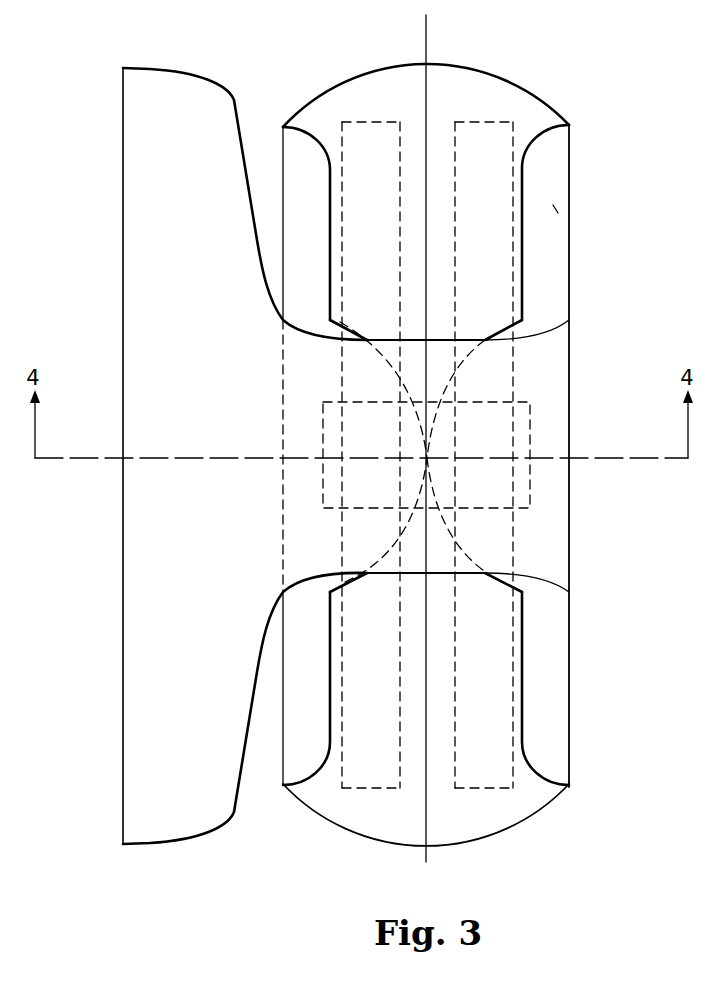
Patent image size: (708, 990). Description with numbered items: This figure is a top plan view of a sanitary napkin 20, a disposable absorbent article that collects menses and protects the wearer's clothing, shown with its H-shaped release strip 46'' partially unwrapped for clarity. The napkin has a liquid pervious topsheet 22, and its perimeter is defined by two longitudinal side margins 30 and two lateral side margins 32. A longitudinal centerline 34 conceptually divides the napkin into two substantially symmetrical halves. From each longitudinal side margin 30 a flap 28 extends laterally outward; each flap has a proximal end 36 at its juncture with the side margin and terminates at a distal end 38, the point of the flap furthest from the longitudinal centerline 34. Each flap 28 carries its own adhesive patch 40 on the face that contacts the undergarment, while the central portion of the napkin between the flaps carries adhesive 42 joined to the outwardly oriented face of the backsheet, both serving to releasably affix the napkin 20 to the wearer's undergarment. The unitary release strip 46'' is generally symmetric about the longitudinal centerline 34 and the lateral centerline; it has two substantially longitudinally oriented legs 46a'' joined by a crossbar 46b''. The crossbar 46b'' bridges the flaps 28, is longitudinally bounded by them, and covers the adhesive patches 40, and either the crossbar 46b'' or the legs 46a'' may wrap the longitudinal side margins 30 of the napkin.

The sanitary napkin 20 is at (155, 858).
The liquid pervious topsheet 22 is at (420, 100).
The flap 28 is at (300, 153).
The longitudinal side margin 30 is at (295, 191).
The lateral side margin 32 is at (432, 75).
The longitudinal centerline 34 is at (427, 25).
The proximal end 36 is at (569, 163).
The distal end 38 is at (428, 458).
The adhesive patch 40 is at (365, 424).
The adhesive 42 is at (363, 138).
The H-shaped release strip 46'' is at (348, 565).
The legs 46a'' is at (415, 243).
The crossbar 46b'' is at (372, 456).